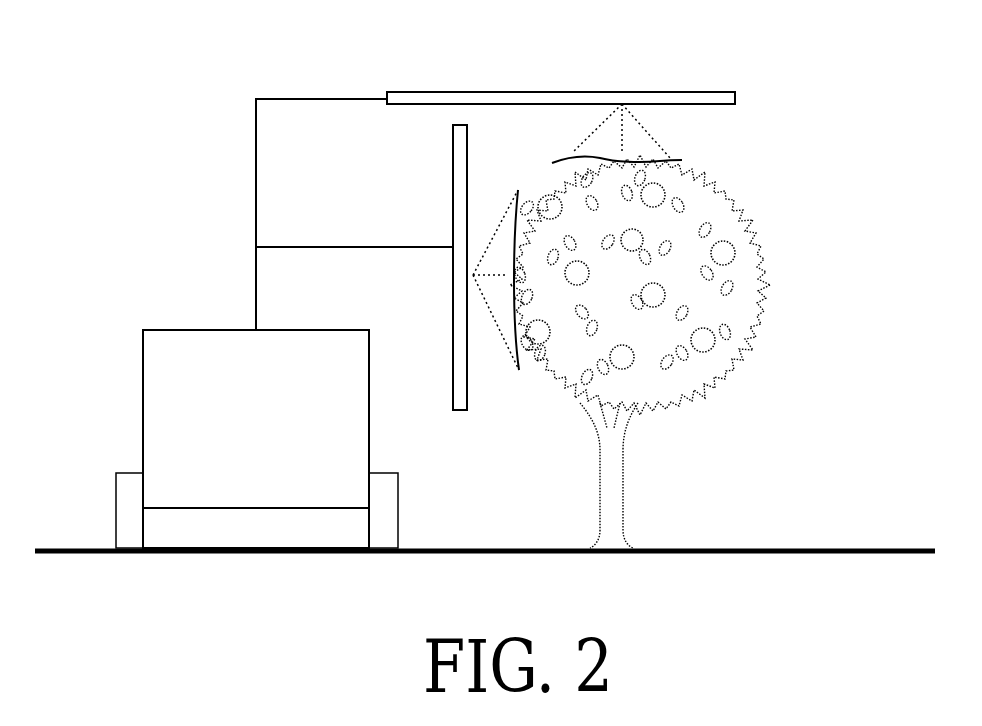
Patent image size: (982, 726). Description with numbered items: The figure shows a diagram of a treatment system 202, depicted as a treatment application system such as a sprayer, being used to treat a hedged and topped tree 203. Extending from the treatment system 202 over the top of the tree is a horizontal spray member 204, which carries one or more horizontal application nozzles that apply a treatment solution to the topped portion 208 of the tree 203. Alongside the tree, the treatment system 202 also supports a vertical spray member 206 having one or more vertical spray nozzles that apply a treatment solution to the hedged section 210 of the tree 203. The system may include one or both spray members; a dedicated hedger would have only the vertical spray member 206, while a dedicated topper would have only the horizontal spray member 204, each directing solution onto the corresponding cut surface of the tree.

The treatment system 202 is at (172, 330).
The hedged and topped tree 203 is at (775, 290).
The horizontal spray member 204 is at (436, 92).
The vertical spray member 206 is at (453, 205).
The topped portion 208 is at (675, 158).
The hedged section 210 is at (512, 374).